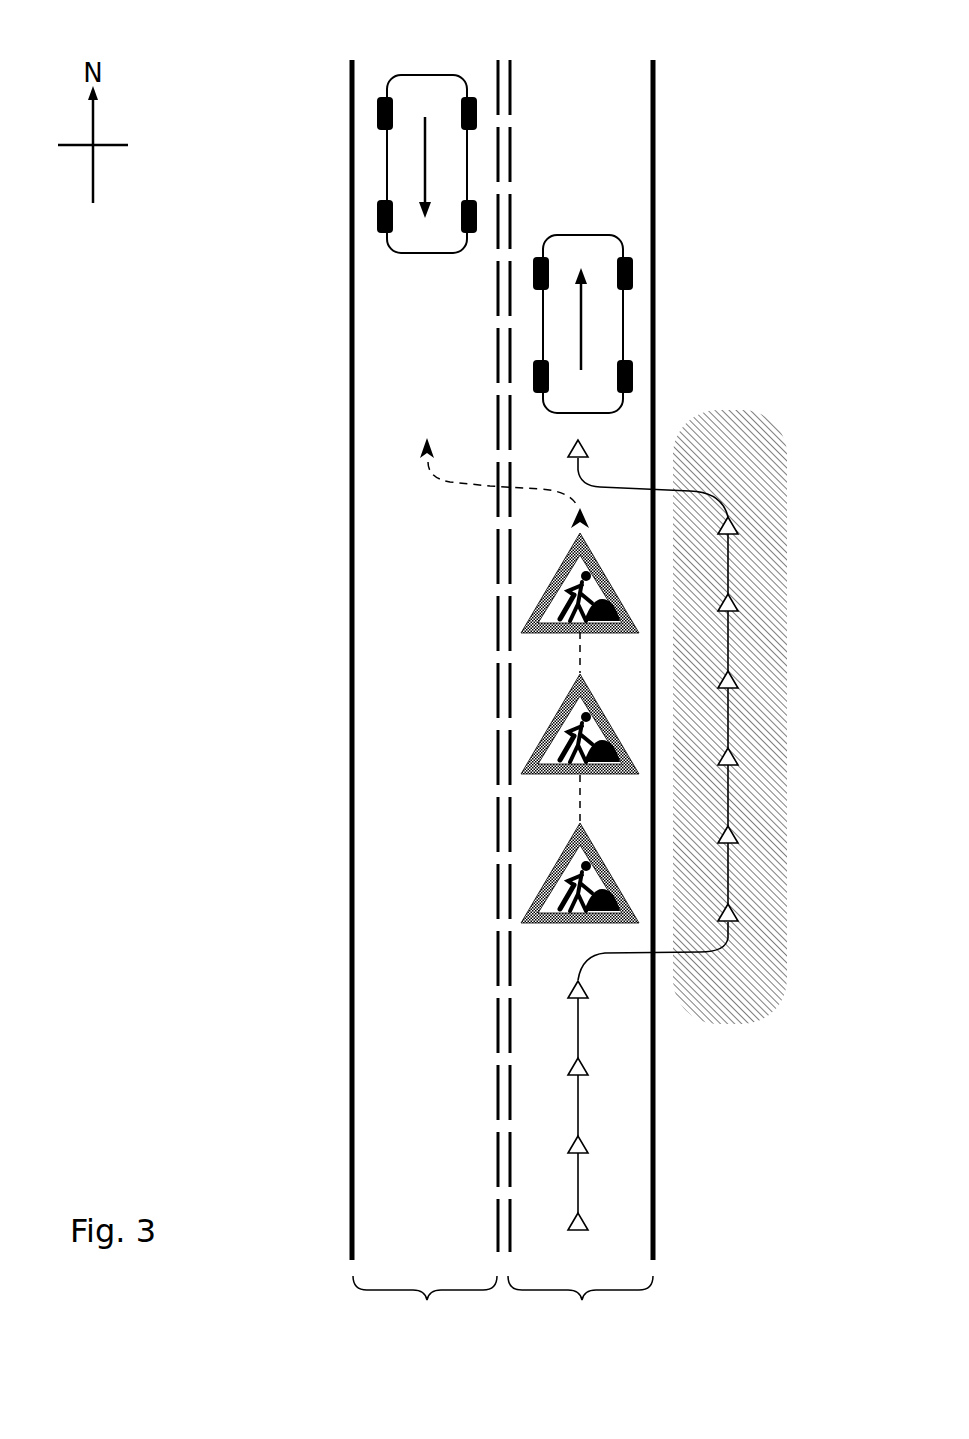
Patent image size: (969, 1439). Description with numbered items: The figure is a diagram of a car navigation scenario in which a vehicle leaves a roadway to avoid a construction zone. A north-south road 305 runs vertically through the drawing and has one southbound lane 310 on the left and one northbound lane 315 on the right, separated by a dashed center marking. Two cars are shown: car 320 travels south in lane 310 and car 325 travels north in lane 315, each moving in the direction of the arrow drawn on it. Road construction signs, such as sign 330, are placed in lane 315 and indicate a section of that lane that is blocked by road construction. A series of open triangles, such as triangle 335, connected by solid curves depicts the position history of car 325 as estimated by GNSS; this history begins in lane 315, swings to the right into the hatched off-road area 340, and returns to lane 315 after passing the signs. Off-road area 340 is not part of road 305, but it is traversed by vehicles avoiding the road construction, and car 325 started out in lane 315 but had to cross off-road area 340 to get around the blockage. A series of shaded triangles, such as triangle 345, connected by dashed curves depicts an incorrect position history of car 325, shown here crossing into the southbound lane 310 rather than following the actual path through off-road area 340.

The north-south road 305 is at (268, 604).
The southbound lane 310 is at (425, 1306).
The northbound lane 315 is at (580, 1306).
The car 320 is at (424, 75).
The car 325 is at (583, 234).
The road construction sign 330 is at (550, 728).
The open triangle 335 is at (585, 1140).
The off-road area 340 is at (750, 410).
The shaded triangle 345 is at (424, 442).